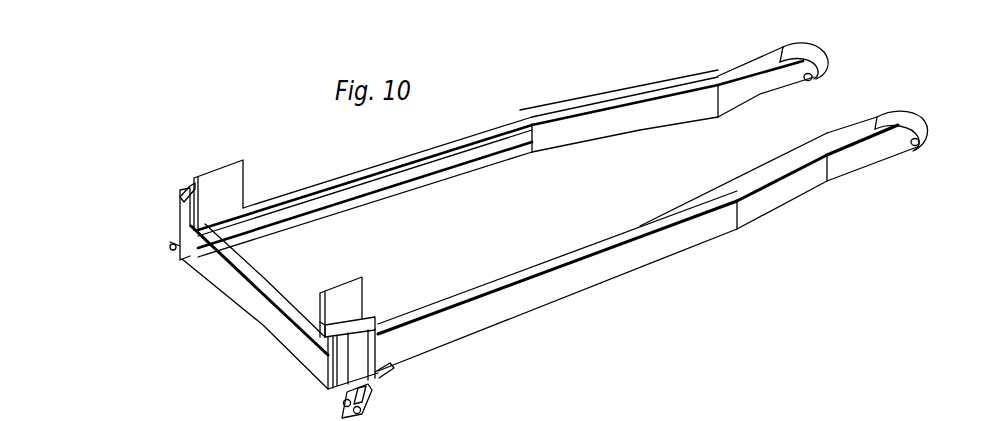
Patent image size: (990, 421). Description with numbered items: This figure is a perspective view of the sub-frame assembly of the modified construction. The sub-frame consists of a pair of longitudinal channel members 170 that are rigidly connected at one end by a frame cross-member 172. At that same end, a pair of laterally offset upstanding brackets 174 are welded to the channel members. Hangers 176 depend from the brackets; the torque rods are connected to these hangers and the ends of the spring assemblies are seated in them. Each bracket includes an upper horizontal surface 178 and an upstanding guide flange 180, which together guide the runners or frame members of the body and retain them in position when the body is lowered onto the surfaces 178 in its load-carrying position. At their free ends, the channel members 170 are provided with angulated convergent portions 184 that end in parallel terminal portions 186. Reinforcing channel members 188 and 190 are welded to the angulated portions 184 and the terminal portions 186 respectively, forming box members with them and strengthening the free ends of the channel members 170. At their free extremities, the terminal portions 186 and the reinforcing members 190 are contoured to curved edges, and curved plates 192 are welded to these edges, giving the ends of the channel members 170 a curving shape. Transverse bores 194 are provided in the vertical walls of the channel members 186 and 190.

The longitudinal channel member 170 is at (446, 164).
The frame cross-member 172 is at (283, 338).
The upstanding bracket 174 is at (183, 217).
The hanger 176 is at (365, 397).
The upper horizontal surface 178 is at (186, 190).
The upstanding guide flange 180 is at (238, 180).
The angulated convergent portion 184 is at (615, 97).
The parallel terminal portion 186 is at (738, 65).
The reinforcing channel member 188 is at (687, 121).
The reinforcing channel member 190 is at (768, 88).
The curved plate 192 is at (793, 58).
The transverse bore 194 is at (817, 80).